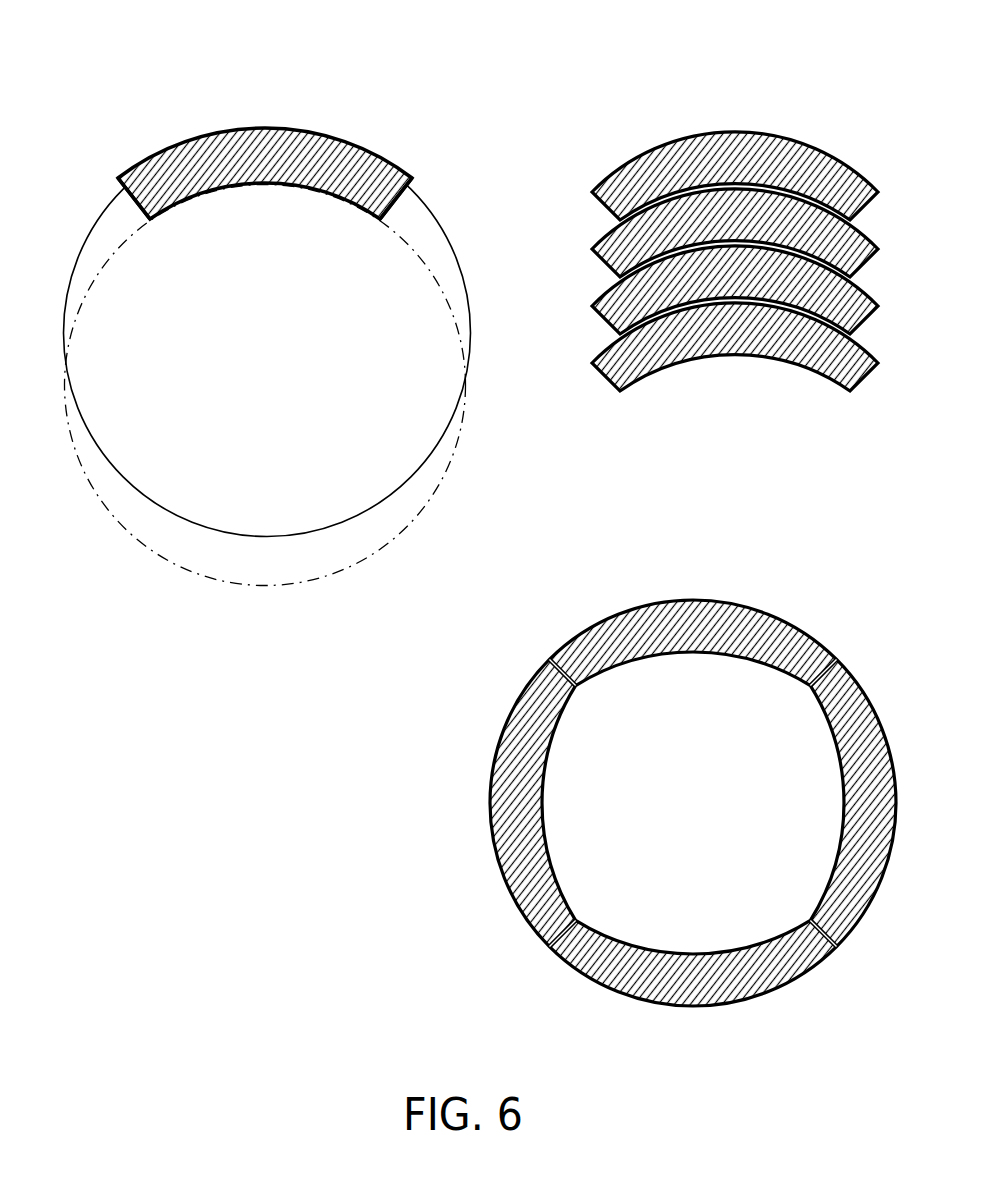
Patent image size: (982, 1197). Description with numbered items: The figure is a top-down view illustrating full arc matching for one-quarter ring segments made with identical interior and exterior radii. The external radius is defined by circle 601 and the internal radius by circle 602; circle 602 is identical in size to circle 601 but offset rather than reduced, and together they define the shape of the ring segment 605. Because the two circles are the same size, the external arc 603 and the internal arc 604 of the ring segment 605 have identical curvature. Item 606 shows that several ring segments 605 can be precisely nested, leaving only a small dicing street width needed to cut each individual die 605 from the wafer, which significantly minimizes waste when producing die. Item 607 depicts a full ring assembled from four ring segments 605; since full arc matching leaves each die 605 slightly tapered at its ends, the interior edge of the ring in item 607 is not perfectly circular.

The circle 601 is at (123, 478).
The circle 602 is at (190, 573).
The external arc 603 is at (261, 168).
The internal arc 604 is at (377, 217).
The ring segment 605 is at (270, 163).
The nesting of ring segments 606 is at (808, 132).
The full ring 607 is at (760, 591).